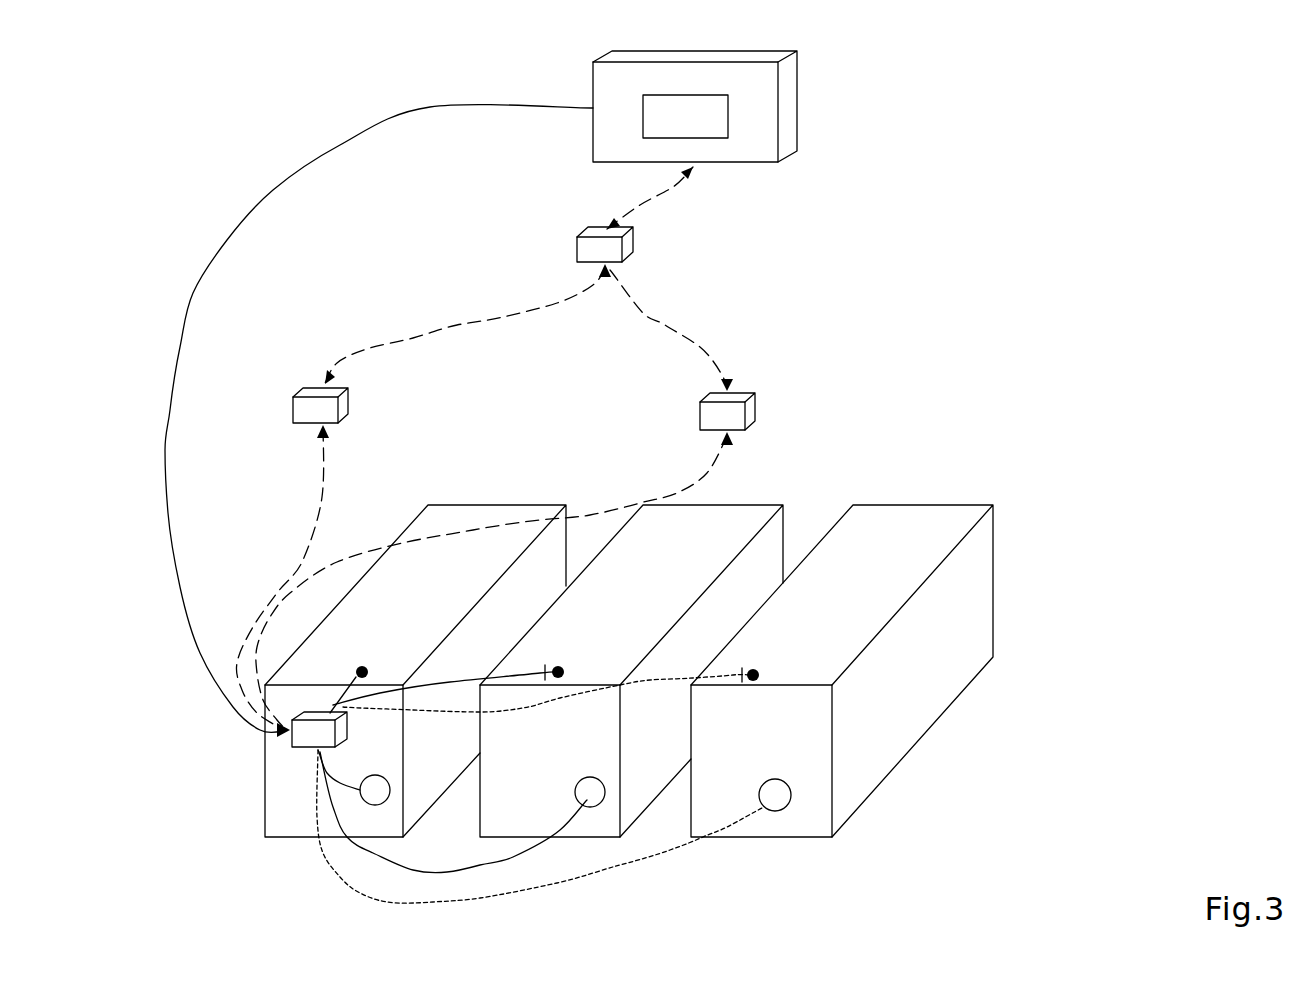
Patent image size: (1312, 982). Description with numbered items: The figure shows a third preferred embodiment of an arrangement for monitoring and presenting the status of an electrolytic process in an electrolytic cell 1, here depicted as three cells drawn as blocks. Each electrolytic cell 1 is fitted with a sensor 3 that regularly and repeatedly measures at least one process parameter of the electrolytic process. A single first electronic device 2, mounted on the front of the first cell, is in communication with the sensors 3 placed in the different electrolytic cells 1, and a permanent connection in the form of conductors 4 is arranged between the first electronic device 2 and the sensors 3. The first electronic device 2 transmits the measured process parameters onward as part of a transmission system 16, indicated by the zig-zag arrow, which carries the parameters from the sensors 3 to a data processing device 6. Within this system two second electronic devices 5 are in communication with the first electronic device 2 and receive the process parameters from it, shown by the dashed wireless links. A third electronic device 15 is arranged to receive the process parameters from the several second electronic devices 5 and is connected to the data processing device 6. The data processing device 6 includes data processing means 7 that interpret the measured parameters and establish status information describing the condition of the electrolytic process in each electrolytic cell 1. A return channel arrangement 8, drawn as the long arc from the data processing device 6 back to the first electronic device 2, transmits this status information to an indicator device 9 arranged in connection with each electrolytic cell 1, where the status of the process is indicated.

The electrolytic cell 1 is at (493, 507).
The first electronic device 2 is at (305, 740).
The sensor 3 is at (370, 670).
The conductors 4 is at (340, 783).
The second electronic device 5 is at (347, 405).
The data processing device 6 is at (787, 122).
The data processing means 7 is at (763, 110).
The return channel arrangement 8 is at (183, 322).
The indicator device 9 is at (373, 797).
The third electronic device 15 is at (627, 240).
The transmission system 16 is at (942, 297).